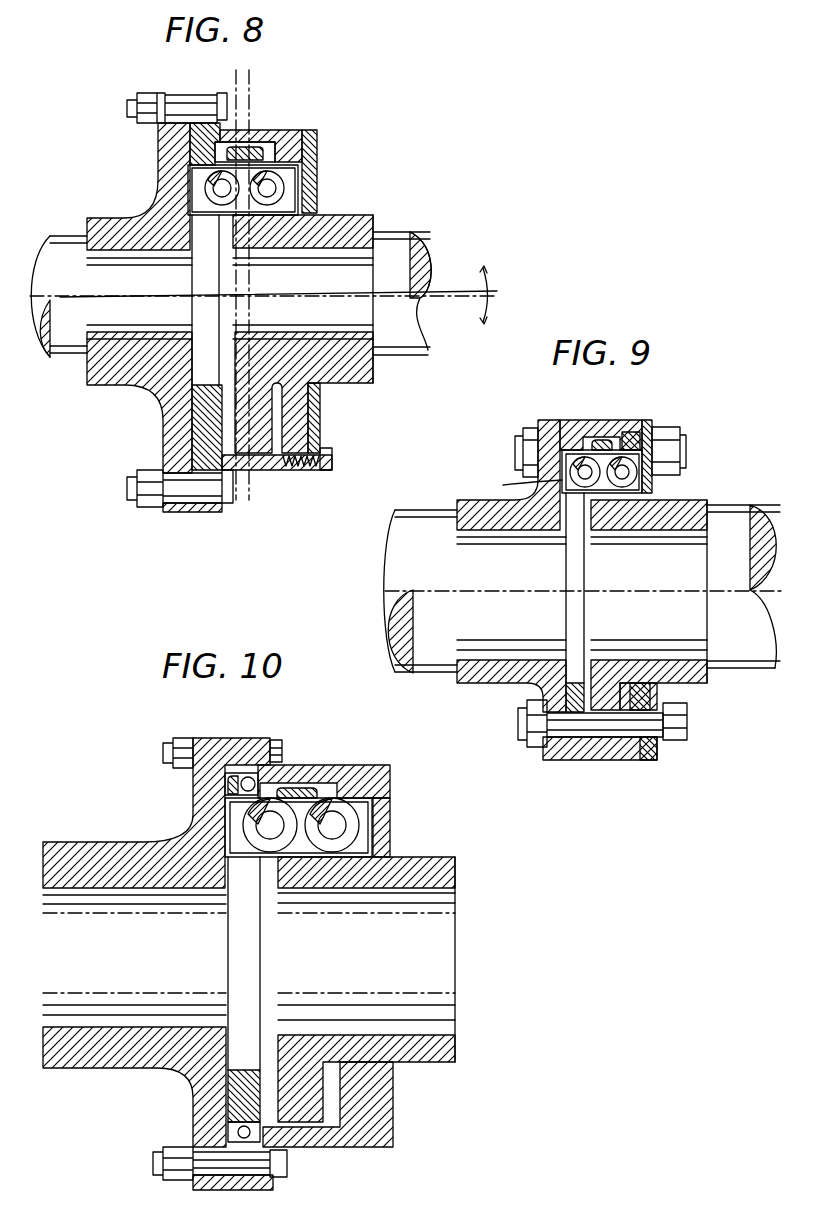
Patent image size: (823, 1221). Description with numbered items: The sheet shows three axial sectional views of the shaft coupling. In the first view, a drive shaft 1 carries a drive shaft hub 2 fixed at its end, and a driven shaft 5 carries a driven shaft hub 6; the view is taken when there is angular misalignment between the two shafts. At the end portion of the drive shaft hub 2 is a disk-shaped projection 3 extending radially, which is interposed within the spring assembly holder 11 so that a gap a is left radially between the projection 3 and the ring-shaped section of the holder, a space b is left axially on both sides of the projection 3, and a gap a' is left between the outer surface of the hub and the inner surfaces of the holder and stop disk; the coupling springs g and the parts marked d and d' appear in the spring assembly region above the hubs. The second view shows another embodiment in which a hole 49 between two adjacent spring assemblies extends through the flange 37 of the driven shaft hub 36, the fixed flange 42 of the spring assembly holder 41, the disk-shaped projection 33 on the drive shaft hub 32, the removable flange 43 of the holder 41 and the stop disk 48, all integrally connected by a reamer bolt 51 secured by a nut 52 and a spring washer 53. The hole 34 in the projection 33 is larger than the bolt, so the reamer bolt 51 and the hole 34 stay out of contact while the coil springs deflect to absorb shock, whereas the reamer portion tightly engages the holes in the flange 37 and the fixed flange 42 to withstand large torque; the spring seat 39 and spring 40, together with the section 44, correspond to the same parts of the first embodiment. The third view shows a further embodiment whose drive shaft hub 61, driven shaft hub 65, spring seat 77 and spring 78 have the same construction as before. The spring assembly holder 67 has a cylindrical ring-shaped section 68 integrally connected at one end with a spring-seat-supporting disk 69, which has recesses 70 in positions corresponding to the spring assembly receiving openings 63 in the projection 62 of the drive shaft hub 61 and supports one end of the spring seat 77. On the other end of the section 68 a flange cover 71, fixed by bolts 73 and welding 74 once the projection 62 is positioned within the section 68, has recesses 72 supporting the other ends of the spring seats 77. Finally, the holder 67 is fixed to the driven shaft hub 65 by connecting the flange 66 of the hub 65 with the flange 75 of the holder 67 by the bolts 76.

In FIG. 8, the drive shaft 1 is at (396, 236).
In FIG. 8, the drive shaft hub 2 is at (352, 218).
In FIG. 8, the disk-shaped projection 3 is at (246, 148).
In FIG. 8, the driven shaft 5 is at (60, 240).
In FIG. 8, the driven shaft hub 6 is at (118, 225).
In FIG. 8, the spring assembly holder 11 is at (244, 274).
In FIG. 8, the gap a is at (277, 476).
In FIG. 9, the gap a is at (614, 775).
In FIG. 8, the space b is at (232, 428).
In FIG. 9, the space b is at (575, 692).
In FIG. 8, the block d is at (253, 156).
In FIG. 8, the bar d' is at (258, 131).
In FIG. 8, the spring box g is at (188, 188).
In FIG. 9, the spring box g is at (686, 490).
In FIG. 9, the drive shaft hub 32 is at (700, 505).
In FIG. 9, the disk-shaped projection 33 is at (600, 437).
In FIG. 9, the hole 34 is at (600, 690).
In FIG. 9, the driven shaft hub 36 is at (480, 505).
In FIG. 9, the flange 37 is at (538, 428).
In FIG. 9, the spring seat 39 is at (566, 435).
In FIG. 9, the spring 40 is at (660, 470).
In FIG. 9, the spring assembly holder 41 is at (582, 445).
In FIG. 9, the fixed flange 42 is at (543, 700).
In FIG. 9, the removable flange 43 is at (645, 425).
In FIG. 9, the bar section 44 is at (626, 432).
In FIG. 9, the stop disk 48 is at (653, 428).
In FIG. 9, the hole 49 is at (565, 760).
In FIG. 9, the reamer bolt 51 is at (530, 728).
In FIG. 9, the nut 52 is at (680, 740).
In FIG. 9, the spring washer 53 is at (655, 752).
In FIG. 9, the gap a' is at (641, 665).
In FIG. 10, the drive shaft hub 61 is at (440, 857).
In FIG. 10, the projection 62 is at (305, 785).
In FIG. 10, the spring assembly receiving openings 63 is at (330, 798).
In FIG. 10, the driven shaft hub 65 is at (118, 845).
In FIG. 10, the flange 66 is at (204, 745).
In FIG. 10, the spring assembly holder 67 is at (364, 768).
In FIG. 10, the cylindrical ring-shaped section 68 is at (300, 775).
In FIG. 10, the spring-seat-supporting disk 69 is at (378, 820).
In FIG. 10, the recesses 70 is at (380, 790).
In FIG. 10, the flange cover 71 is at (240, 1080).
In FIG. 10, the recesses 72 is at (228, 825).
In FIG. 10, the bolts 73 is at (236, 775).
In FIG. 10, the welding 74 is at (228, 780).
In FIG. 10, the flange 75 is at (263, 745).
In FIG. 10, the bolts 76 is at (168, 745).
In FIG. 10, the spring seat 77 is at (362, 830).
In FIG. 10, the spring 78 is at (332, 852).